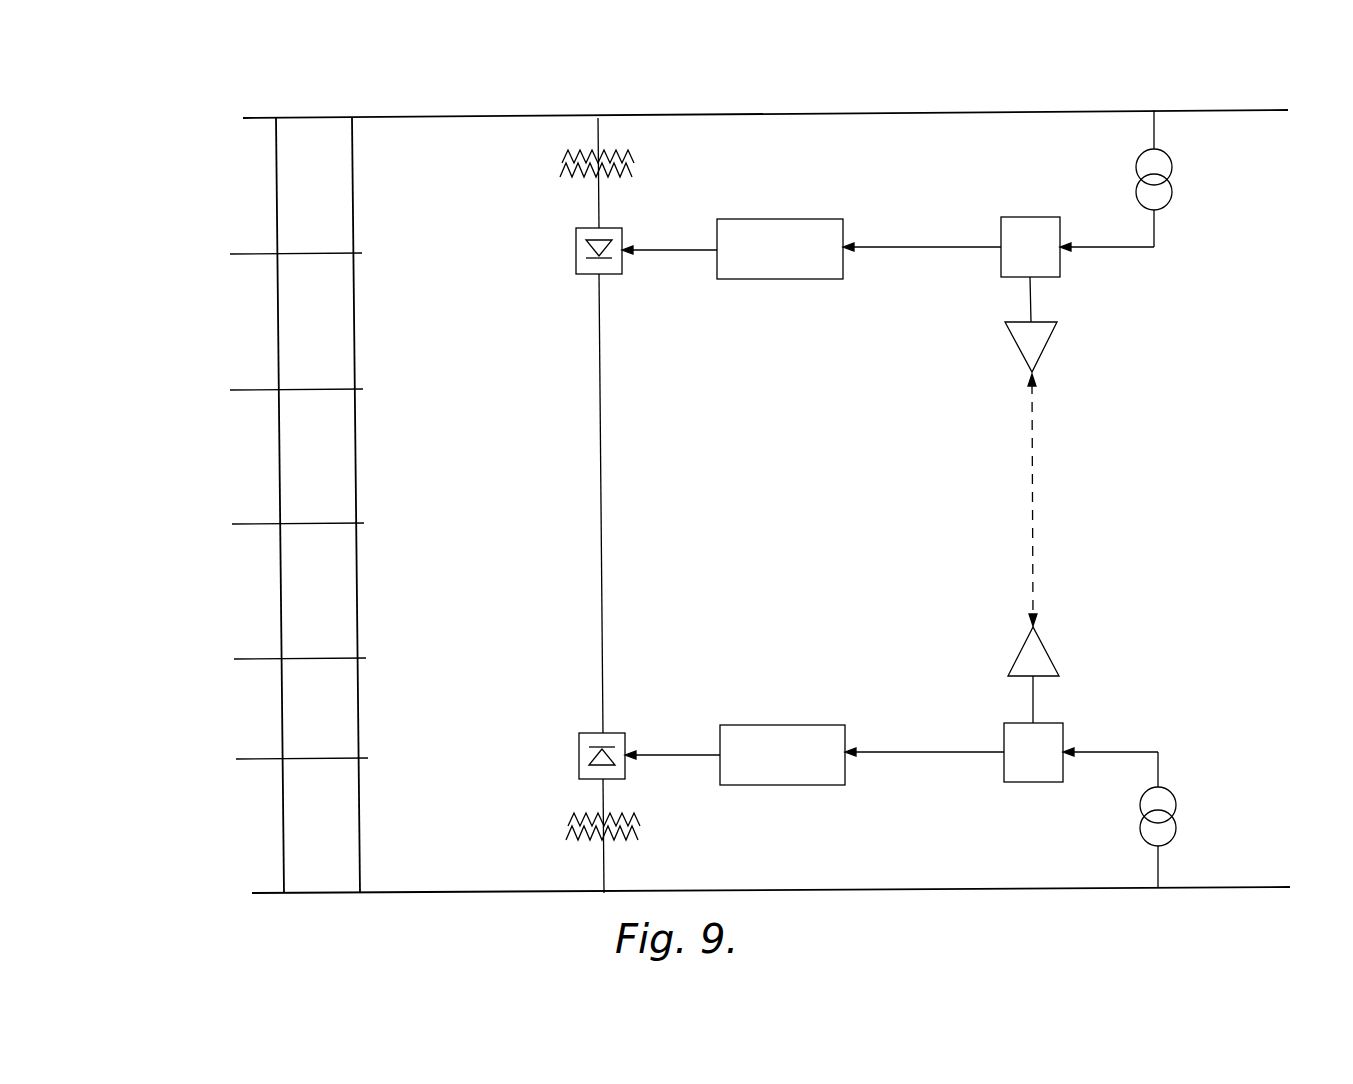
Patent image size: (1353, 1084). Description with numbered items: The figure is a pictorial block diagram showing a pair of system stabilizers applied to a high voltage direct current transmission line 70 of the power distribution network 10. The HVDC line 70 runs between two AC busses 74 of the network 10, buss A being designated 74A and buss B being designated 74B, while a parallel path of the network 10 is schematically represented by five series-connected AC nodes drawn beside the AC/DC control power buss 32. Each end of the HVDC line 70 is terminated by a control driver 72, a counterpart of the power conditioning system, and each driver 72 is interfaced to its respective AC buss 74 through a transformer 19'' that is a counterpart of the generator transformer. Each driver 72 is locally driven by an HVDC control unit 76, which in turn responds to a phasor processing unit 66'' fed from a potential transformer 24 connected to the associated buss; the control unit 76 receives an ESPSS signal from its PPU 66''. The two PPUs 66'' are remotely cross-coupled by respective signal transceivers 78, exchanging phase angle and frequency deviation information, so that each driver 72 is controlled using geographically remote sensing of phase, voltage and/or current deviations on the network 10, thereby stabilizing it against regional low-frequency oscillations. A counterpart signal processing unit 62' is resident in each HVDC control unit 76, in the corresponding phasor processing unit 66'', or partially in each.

The power distribution network 10 is at (880, 918).
The transformer 19'' is at (583, 510).
The potential transformer 24 is at (1172, 172).
The AC/DC control power buss 32 is at (300, 508).
The signal processing unit 62' is at (920, 466).
The phasor processing unit 66'' is at (1035, 518).
The high voltage direct current transmission line 70 is at (603, 472).
The control driver 72 is at (584, 276).
The AC buss 74 is at (360, 846).
The buss A 74A is at (457, 120).
The buss B 74B is at (452, 893).
The HVDC control unit 76 is at (779, 219).
The signal transceiver 78 is at (1020, 356).